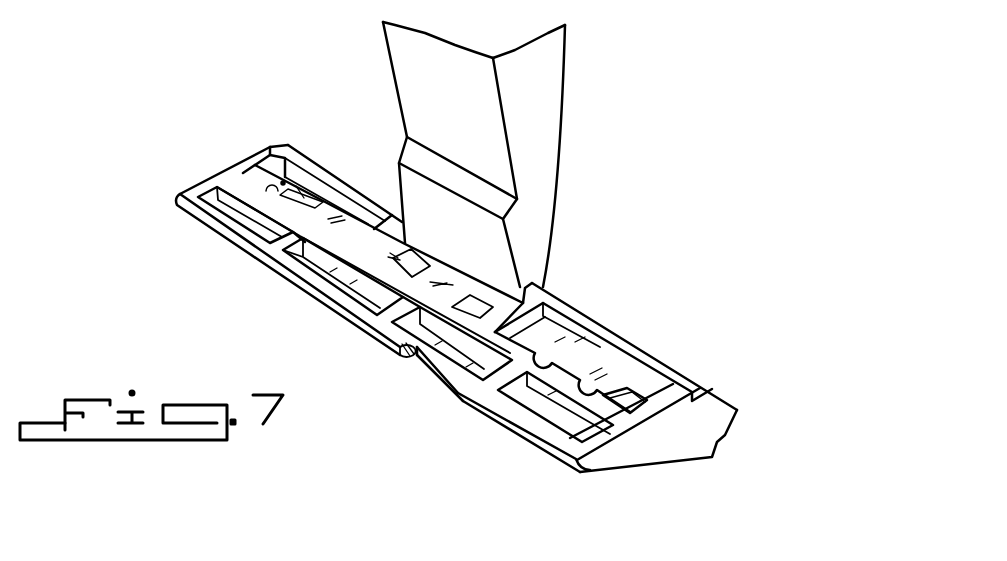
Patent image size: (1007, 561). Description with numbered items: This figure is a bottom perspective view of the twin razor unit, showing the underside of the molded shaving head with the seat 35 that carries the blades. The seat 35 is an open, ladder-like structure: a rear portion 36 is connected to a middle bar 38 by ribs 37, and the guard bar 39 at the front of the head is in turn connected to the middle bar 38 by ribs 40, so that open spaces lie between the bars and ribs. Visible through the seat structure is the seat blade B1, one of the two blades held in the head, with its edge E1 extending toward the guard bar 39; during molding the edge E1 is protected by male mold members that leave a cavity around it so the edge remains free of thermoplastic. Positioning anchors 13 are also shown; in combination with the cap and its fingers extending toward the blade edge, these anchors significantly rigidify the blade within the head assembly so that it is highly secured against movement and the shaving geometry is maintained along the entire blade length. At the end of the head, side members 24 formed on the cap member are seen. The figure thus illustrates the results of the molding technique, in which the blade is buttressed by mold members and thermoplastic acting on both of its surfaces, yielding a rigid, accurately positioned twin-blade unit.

The positioning anchors 13 is at (628, 398).
The side members 24 is at (698, 448).
The seat 35 is at (208, 175).
The rear portion 36 is at (740, 410).
The ribs 37 is at (370, 224).
The middle bar 38 is at (238, 184).
The guard bar 39 is at (362, 331).
The ribs 40 is at (283, 240).
The seat blade B1 is at (573, 357).
The edge of seat blade E1 is at (443, 368).